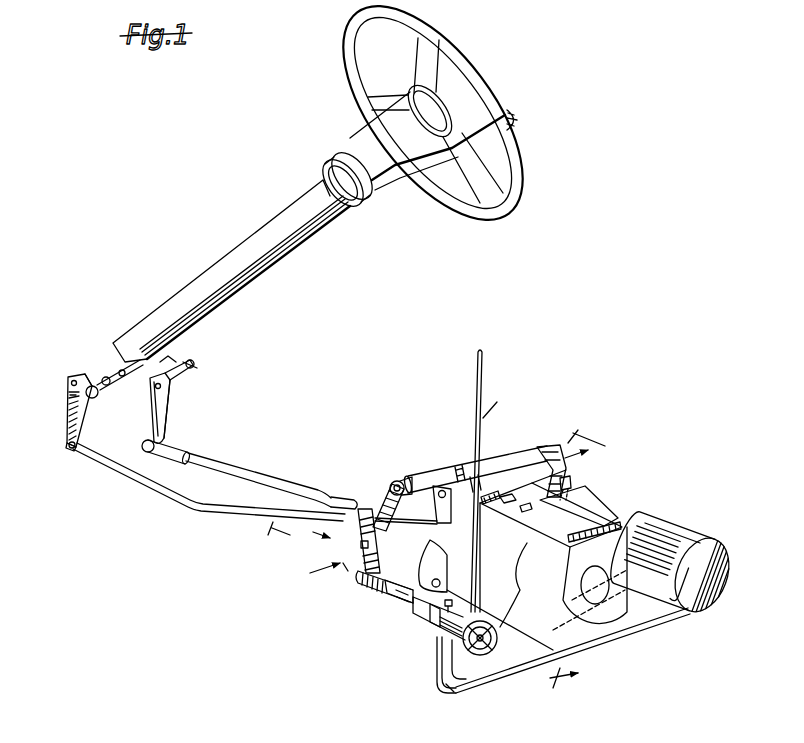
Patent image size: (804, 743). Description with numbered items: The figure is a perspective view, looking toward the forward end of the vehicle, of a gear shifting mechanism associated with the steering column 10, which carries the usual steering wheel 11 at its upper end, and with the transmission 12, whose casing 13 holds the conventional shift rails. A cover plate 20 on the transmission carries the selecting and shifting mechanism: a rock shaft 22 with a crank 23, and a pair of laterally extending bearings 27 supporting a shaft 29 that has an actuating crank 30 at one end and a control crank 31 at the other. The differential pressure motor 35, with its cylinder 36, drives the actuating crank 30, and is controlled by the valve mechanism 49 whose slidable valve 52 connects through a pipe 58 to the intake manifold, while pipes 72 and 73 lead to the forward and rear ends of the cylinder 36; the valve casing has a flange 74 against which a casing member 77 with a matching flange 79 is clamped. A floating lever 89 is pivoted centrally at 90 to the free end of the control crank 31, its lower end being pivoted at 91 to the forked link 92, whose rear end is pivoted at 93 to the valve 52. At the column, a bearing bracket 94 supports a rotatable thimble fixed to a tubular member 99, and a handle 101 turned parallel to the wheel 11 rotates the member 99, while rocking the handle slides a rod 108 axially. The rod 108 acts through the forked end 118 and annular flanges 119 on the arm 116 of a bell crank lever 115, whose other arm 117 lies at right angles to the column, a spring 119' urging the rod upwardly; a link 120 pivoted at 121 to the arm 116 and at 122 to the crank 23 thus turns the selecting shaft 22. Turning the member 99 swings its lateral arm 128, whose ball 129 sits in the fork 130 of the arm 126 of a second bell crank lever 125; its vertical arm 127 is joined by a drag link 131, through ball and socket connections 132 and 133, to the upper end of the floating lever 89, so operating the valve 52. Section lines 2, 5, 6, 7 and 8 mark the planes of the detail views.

The section line 2- 2 is at (437, 632).
The section line 5- 5 is at (451, 734).
The section line 6- 6 is at (431, 483).
The section line 7- 7 is at (440, 500).
The section line 8- 8 is at (417, 432).
The steering column 10 is at (261, 228).
The steering wheel 11 is at (488, 79).
The transmission 12 is at (600, 632).
The casing 13 is at (500, 590).
The cover plate 20 is at (582, 500).
The rock shaft 22 is at (455, 475).
The crank 23 is at (428, 478).
The bearings 27 is at (423, 477).
The shaft 29 is at (398, 481).
The actuating crank 30 is at (552, 484).
The control crank 31 is at (390, 486).
The motor 35 is at (700, 533).
The cylinder 36 is at (654, 530).
The valve mechanism 49 is at (424, 627).
The valve 52 is at (403, 616).
The pipe 58 is at (475, 456).
The pipe 72 is at (512, 653).
The pipe 73 is at (435, 660).
The flange 74 is at (571, 734).
The casing member 77 is at (456, 693).
The flange portion 79 is at (623, 734).
The floating lever 89 is at (375, 562).
The pivot 90 is at (360, 546).
The pivot 91 is at (360, 580).
The link 92 is at (377, 589).
The pivot 93 is at (399, 604).
The bearing bracket 94 is at (330, 170).
The tubular member 99 is at (223, 304).
The handle 101 is at (470, 134).
The rod 108 is at (115, 384).
The bell crank lever 115 is at (70, 375).
The arm 116 is at (66, 441).
The arm 117 is at (90, 371).
The forked end 118 is at (94, 399).
The annular flanges 119 is at (125, 396).
The spring 119' is at (58, 405).
The link 120 is at (184, 505).
The pivot 121 is at (70, 448).
The pivot 122 is at (426, 527).
The bell crank lever 125 is at (168, 416).
The arm 126 is at (172, 382).
The arm 127 is at (168, 428).
The arm 128 is at (162, 362).
The ball 129 is at (197, 363).
The fork 130 is at (195, 368).
The drag link 131 is at (260, 484).
The connection 132 is at (151, 448).
The connection 133 is at (350, 500).